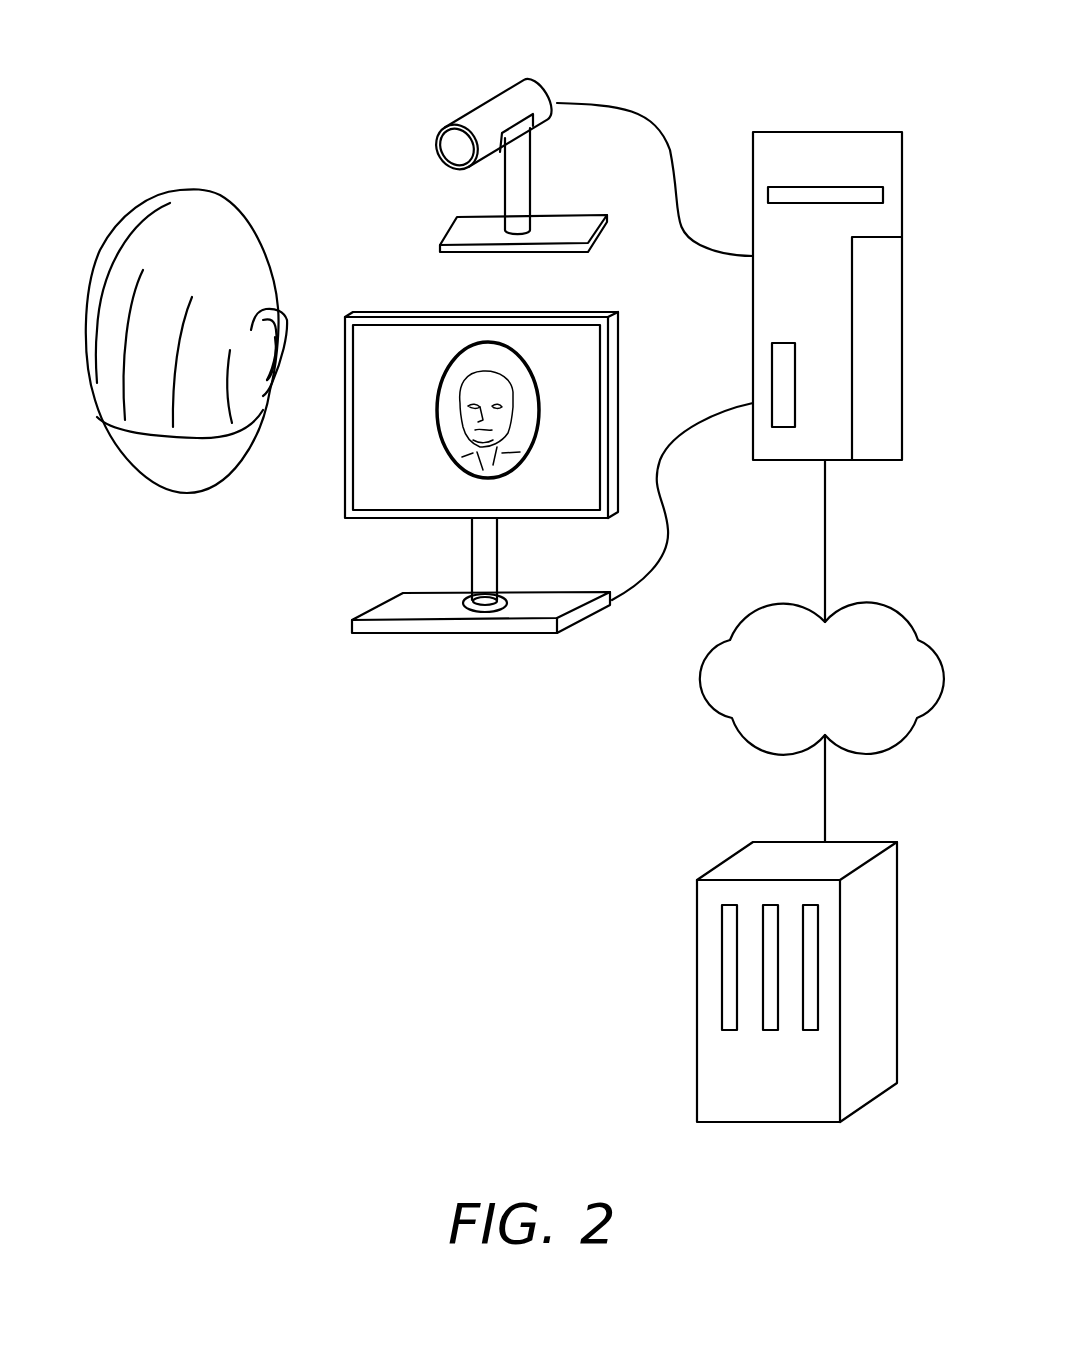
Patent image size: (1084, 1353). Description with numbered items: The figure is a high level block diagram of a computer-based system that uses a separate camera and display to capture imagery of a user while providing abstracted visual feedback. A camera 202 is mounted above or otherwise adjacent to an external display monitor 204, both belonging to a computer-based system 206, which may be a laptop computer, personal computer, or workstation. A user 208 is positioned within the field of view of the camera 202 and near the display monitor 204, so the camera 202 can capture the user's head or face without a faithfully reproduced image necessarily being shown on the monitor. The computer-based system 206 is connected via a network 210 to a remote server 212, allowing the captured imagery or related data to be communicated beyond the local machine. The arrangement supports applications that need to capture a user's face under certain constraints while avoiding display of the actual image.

The camera 202 is at (438, 130).
The external display monitor 204 is at (363, 522).
The computer-based system 206 is at (785, 135).
The user 208 is at (167, 190).
The network 210 is at (713, 713).
The remote server 212 is at (700, 905).